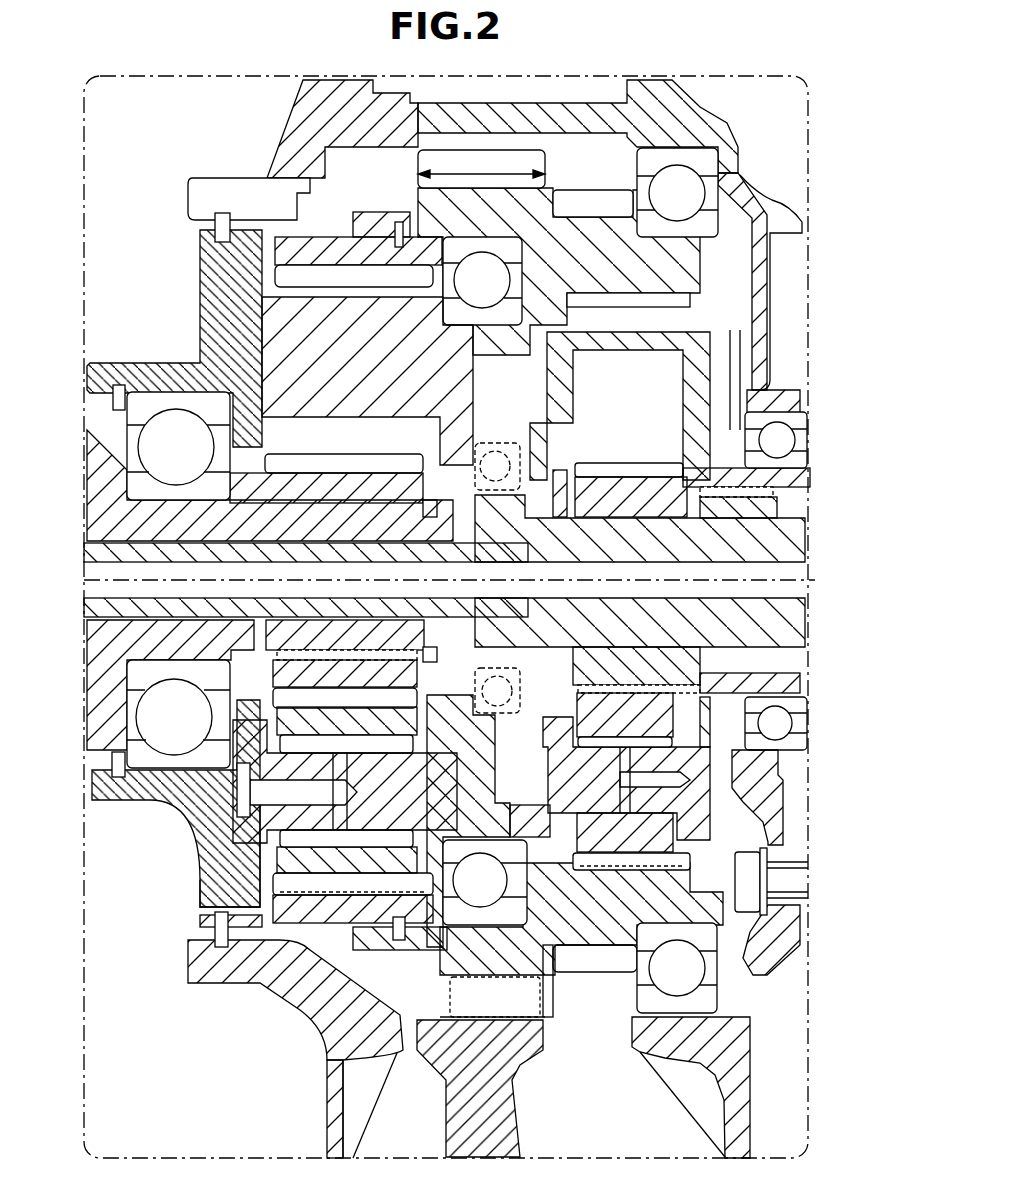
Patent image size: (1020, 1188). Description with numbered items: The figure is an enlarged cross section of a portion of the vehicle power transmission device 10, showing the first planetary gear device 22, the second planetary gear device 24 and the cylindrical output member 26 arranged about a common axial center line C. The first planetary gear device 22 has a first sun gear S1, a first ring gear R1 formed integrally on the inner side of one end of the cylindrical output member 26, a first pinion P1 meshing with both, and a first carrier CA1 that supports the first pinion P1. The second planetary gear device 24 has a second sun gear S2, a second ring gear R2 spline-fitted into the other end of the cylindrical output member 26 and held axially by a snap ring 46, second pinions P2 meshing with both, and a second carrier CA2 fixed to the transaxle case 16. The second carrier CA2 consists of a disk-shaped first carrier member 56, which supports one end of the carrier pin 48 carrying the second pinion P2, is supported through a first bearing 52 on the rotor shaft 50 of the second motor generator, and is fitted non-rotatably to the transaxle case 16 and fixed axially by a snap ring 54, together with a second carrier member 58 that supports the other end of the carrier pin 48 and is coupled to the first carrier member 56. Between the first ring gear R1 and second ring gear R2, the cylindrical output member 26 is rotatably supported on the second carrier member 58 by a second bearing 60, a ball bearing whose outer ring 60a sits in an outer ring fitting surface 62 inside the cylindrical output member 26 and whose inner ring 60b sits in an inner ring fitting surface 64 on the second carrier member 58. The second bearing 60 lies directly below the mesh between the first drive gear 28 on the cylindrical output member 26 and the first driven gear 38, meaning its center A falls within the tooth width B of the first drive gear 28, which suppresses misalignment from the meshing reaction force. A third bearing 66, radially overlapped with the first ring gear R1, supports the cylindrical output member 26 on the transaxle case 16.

The power transmission device 10 is at (198, 66).
The transaxle case 16 is at (332, 1130).
The first planetary gear device 22 is at (320, 940).
The second planetary gear device 24 is at (712, 817).
The cylindrical output member 26 is at (575, 935).
The first drive gear 28 is at (547, 160).
The first driven gear 38 is at (503, 1118).
The snap ring 46 is at (399, 942).
The carrier pin 48 is at (456, 781).
The rotor shaft 50 is at (92, 657).
The first bearing 52 is at (165, 714).
The snap ring 54 is at (222, 948).
The first carrier member 56 is at (205, 857).
The second carrier member 58 is at (470, 748).
The second bearing 60 is at (486, 969).
The outer ring 60a is at (512, 888).
The inner ring 60b is at (516, 862).
The outer ring fitting surface 62 is at (505, 928).
The inner ring fitting surface 64 is at (527, 843).
The third bearing 66 is at (685, 975).
The center A is at (483, 278).
The tooth width B is at (481, 165).
The axial center line C is at (458, 571).
The first carrier CA1 is at (673, 345).
The second carrier CA2 is at (86, 792).
The first pinion P1 is at (665, 848).
The second pinion P2 is at (250, 722).
The first ring gear R1 is at (687, 864).
The second ring gear R2 is at (285, 906).
The first sun gear S1 is at (628, 465).
The second sun gear S2 is at (346, 457).